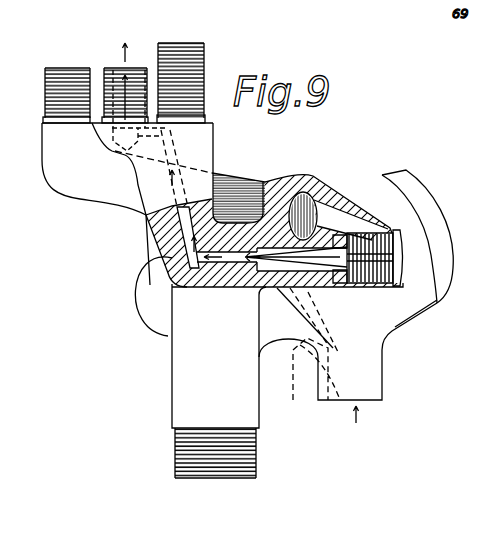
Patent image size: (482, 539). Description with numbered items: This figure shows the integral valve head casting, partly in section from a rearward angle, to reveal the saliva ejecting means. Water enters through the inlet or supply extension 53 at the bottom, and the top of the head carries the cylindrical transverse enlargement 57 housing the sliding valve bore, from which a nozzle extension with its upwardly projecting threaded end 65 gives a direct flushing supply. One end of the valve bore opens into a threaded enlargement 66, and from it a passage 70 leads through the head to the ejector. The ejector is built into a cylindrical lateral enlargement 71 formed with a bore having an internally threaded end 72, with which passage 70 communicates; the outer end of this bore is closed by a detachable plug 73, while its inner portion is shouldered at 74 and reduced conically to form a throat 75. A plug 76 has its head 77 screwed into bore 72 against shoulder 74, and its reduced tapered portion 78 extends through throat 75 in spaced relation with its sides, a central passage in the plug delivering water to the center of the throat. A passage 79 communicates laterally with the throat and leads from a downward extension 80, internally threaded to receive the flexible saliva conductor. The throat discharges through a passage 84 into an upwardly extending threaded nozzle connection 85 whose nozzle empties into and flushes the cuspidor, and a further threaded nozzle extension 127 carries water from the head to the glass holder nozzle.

The inlet or supply extension 53 is at (259, 407).
The cylindrical transverse enlargement 57 is at (275, 187).
The threaded end 65 is at (51, 72).
The threaded enlargement 66 is at (308, 192).
The passage 70 is at (334, 208).
The cylindrical lateral enlargement 71 is at (300, 343).
The internally threaded end of bore 72 is at (385, 283).
The detachable plug 73 is at (403, 250).
The shoulder 74 is at (323, 287).
The throat 75 is at (248, 288).
The plug 76 is at (334, 220).
The head of plug 77 is at (345, 284).
The reduced tapered portion 78 is at (306, 291).
The passage 79 is at (345, 333).
The downward extension 80 is at (385, 378).
The passage 84 is at (177, 232).
The threaded nozzle connection 85 is at (112, 72).
The threaded nozzle extension 127 is at (196, 63).